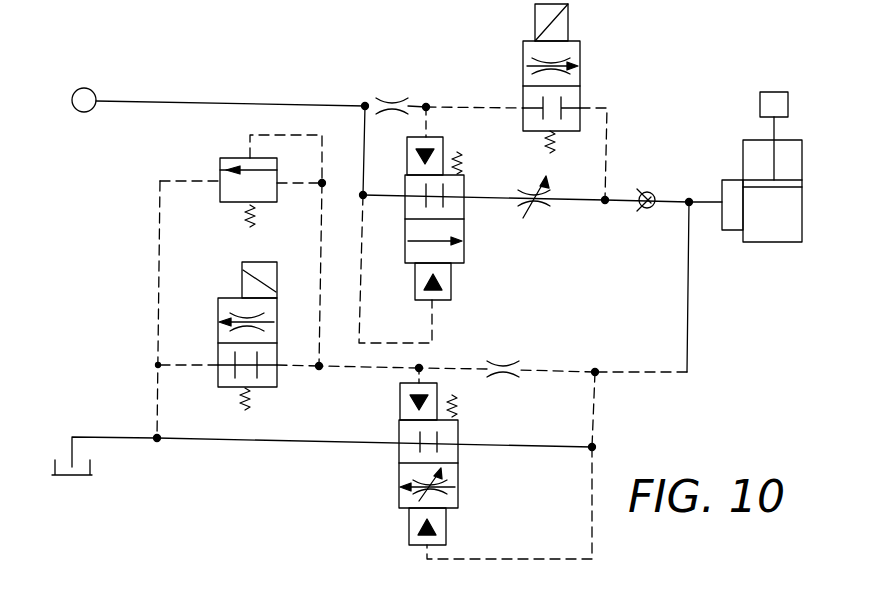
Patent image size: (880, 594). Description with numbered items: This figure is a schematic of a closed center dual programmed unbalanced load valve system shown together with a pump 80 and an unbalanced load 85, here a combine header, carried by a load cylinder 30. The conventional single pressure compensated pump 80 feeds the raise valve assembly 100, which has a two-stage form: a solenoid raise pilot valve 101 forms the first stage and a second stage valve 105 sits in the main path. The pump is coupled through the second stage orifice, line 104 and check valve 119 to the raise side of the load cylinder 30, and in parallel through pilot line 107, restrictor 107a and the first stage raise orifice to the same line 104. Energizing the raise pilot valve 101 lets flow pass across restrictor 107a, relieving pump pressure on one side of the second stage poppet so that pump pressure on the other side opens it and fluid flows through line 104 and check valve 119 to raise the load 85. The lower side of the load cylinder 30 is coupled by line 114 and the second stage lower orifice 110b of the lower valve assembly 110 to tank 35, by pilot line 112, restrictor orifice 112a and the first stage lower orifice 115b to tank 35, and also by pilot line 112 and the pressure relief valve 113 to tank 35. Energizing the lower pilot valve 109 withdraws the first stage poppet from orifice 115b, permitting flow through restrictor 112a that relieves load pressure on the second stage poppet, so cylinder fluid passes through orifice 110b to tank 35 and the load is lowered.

The pump 80 is at (74, 108).
The line 104 is at (202, 106).
The restrictor 107a is at (388, 98).
The raise valve assembly 100 is at (478, 63).
The pilot line 107 is at (491, 106).
The raise pilot valve 101 is at (582, 68).
The second stage raise valve 105 is at (464, 236).
The check valve 119 is at (655, 208).
The load 85 is at (760, 107).
The load cylinder 30 is at (755, 243).
The line 114 is at (689, 340).
The pilot line 112 is at (546, 368).
The restrictor orifice 112a is at (505, 360).
The lower valve assembly 110 is at (346, 423).
The second stage lower orifice 110b is at (452, 480).
The pressure relief valve 113 is at (220, 192).
The lower pilot valve 109 is at (218, 313).
The first stage lower orifice 115b is at (223, 313).
The tank 35 is at (85, 471).